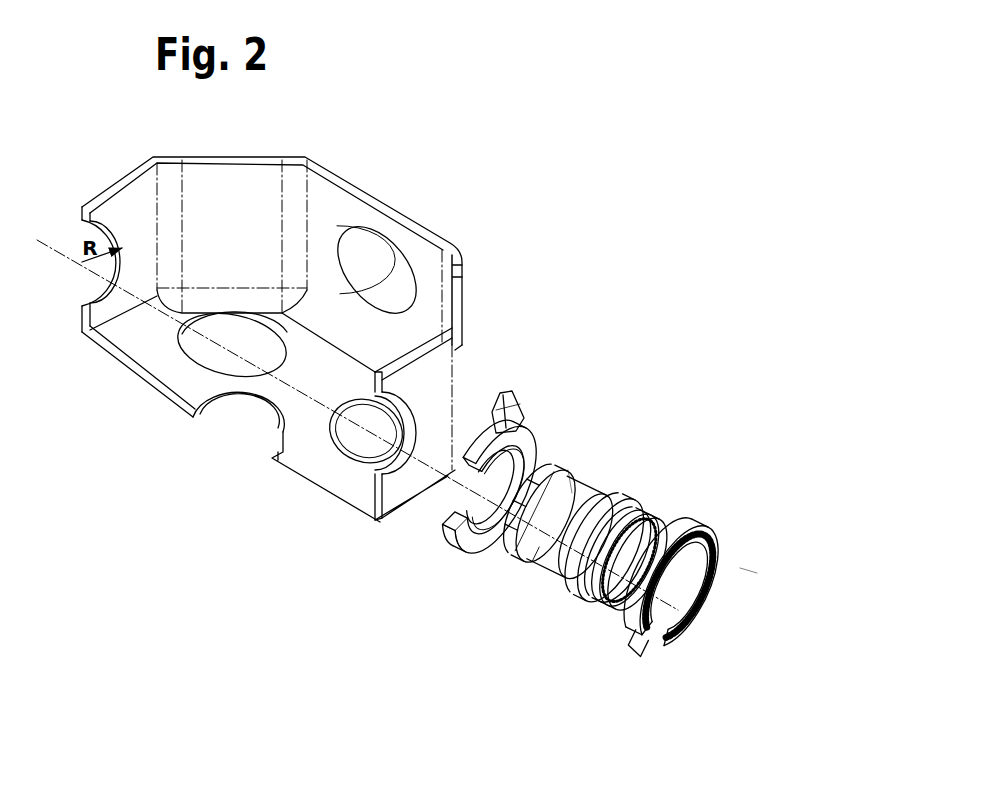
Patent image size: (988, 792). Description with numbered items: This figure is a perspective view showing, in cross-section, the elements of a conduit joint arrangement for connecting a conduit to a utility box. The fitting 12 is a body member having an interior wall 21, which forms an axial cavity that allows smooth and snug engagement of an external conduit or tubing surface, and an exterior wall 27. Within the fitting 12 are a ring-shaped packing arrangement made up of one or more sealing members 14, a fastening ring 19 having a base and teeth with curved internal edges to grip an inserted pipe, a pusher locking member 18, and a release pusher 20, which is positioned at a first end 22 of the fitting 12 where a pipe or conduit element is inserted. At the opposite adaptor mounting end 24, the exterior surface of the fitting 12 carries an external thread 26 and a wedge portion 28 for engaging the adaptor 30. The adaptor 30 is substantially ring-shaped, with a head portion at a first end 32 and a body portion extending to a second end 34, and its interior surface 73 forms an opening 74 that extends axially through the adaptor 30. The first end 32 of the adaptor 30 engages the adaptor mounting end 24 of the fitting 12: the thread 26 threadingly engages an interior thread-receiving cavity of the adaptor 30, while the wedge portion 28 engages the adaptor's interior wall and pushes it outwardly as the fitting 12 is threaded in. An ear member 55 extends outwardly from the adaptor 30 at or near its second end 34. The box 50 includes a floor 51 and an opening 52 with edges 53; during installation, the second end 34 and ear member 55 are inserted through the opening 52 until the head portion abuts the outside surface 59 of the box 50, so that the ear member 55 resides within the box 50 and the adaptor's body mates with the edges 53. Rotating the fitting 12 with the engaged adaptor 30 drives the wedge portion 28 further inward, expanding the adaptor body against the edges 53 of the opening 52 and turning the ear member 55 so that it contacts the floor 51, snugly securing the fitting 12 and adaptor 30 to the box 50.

The fitting 12 is at (572, 493).
The sealing member 14 is at (650, 582).
The pusher locking member 18 is at (635, 615).
The fastening ring 19 is at (640, 600).
The release pusher 20 is at (668, 610).
The interior wall 21 is at (568, 568).
The first end 22 is at (757, 573).
The adaptor mounting end 24 is at (555, 468).
The external thread 26 is at (540, 578).
The exterior wall 27 is at (618, 500).
The wedge portion 28 is at (525, 555).
The adaptor 30 is at (520, 430).
The first end 32 is at (460, 562).
The second end 34 is at (432, 510).
The box 50 is at (272, 339).
The floor 51 is at (190, 378).
The opening 52 is at (368, 245).
The edges 53 is at (410, 397).
The ear member 55 is at (505, 397).
The outside surface 59 is at (428, 373).
The interior surface 73 is at (465, 512).
The opening 74 is at (470, 483).